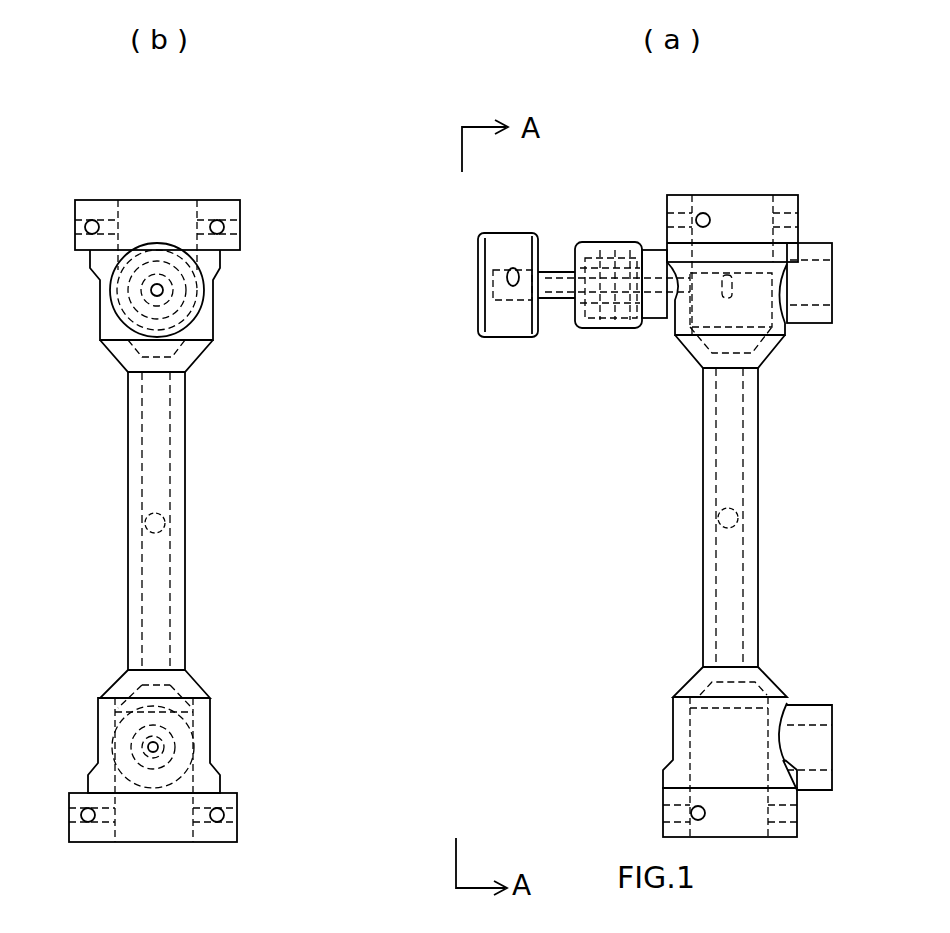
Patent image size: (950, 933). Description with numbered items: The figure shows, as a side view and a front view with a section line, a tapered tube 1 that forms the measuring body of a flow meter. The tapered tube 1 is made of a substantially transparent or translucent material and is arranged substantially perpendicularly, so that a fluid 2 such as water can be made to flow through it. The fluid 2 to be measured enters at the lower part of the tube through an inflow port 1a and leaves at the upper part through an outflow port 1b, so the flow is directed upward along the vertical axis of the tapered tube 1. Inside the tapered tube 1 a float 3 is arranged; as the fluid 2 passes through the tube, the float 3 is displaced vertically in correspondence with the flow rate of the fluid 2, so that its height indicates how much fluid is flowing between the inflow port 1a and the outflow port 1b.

The tapered tube 1 is at (182, 483).
The inflow port 1a is at (167, 742).
The outflow port 1b is at (157, 290).
The fluid 2 is at (157, 603).
The float 3 is at (167, 523).